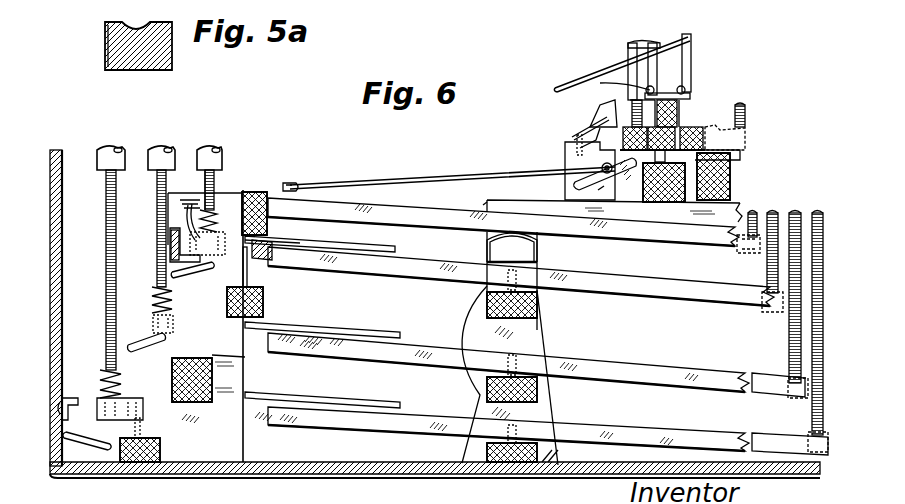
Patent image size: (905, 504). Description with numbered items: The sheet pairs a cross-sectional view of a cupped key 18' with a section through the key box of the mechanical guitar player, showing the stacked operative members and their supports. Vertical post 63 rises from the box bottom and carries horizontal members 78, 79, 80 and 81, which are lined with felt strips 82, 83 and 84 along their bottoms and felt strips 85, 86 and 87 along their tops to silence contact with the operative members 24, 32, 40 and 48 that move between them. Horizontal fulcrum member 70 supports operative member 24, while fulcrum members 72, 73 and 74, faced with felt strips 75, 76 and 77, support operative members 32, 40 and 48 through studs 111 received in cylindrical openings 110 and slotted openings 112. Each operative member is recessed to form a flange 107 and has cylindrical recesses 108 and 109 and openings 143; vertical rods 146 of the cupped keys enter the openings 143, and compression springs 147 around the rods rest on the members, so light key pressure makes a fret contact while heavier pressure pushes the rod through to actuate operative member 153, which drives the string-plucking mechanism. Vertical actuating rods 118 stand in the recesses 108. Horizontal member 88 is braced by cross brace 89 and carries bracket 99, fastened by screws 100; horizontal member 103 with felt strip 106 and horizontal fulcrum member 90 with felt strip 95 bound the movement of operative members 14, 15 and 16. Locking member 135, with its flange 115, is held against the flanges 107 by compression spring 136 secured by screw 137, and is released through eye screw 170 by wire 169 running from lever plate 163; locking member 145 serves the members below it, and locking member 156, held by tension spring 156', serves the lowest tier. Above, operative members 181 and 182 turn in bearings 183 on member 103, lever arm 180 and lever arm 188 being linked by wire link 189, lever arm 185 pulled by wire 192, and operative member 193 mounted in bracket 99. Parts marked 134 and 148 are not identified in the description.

In FIG. 5A, the bar block 18' is at (158, 49).
In FIG. 6, the operative member 24 is at (503, 222).
In FIG. 6, the operative member 32 is at (521, 276).
In FIG. 6, the operative member 40 is at (536, 365).
In FIG. 6, the operative member 48 is at (548, 431).
In FIG. 6, the wire 169 is at (385, 183).
In FIG. 6, the lever plate 163 is at (280, 184).
In FIG. 6, the horizontal member 88 is at (664, 196).
In FIG. 6, the cross brace 89 is at (483, 205).
In FIG. 6, the vertical actuating rod 118 is at (816, 210).
In FIG. 6, the vertical cylindrical recess 108 is at (750, 132).
In FIG. 6, the lever arm 180 is at (628, 62).
In FIG. 6, the lever arm 188 is at (660, 44).
In FIG. 6, the wire link 189 is at (643, 43).
In FIG. 6, the lever arm 185 is at (692, 48).
In FIG. 6, the operative member 182 is at (605, 62).
In FIG. 6, the wire 192 is at (565, 88).
In FIG. 6, the link 134 is at (600, 72).
In FIG. 6, the operative member 181 is at (686, 88).
In FIG. 6, the bearing 183 is at (690, 96).
In FIG. 6, the horizontal member 103 is at (705, 104).
In FIG. 6, the felt strip 106 is at (680, 118).
In FIG. 6, the operative member 14 is at (634, 104).
In FIG. 6, the operative member 16 is at (700, 140).
In FIG. 6, the operative member 15 is at (665, 156).
In FIG. 6, the horizontal fulcrum member 70 is at (540, 248).
In FIG. 6, the horizontal fulcrum member 90 is at (713, 176).
In FIG. 6, the felt strip 95 is at (742, 156).
In FIG. 6, the screw 100 is at (590, 112).
In FIG. 6, the horizontal locking member 135 is at (572, 135).
In FIG. 6, the flange 115 is at (577, 146).
In FIG. 6, the compression spring 136 is at (580, 150).
In FIG. 6, the eye screw 170 is at (600, 168).
In FIG. 6, the screw 137 is at (575, 184).
In FIG. 6, the bracket 99 is at (607, 193).
In FIG. 6, the operative member 193 is at (600, 200).
In FIG. 6, the vertical cylindrical recess 109 is at (600, 106).
In FIG. 6, the flange 107 is at (590, 120).
In FIG. 6, the horizontal fulcrum member 72 is at (540, 307).
In FIG. 6, the felt strip 75 is at (490, 294).
In FIG. 6, the vertical cylindrical opening 110 is at (470, 330).
In FIG. 6, the felt strip 76 is at (540, 372).
In FIG. 6, the horizontal fulcrum member 73 is at (545, 392).
In FIG. 6, the felt strip 77 is at (493, 449).
In FIG. 6, the horizontal fulcrum member 74 is at (560, 456).
In FIG. 6, the stud 111 is at (275, 251).
In FIG. 6, the vertical slotted opening 112 is at (344, 247).
In FIG. 6, the horizontal member 78 is at (270, 230).
In FIG. 6, the felt strip 82 is at (303, 242).
In FIG. 6, the rod 148 is at (248, 268).
In FIG. 6, the horizontal member 79 is at (266, 307).
In FIG. 6, the felt strip 85 is at (265, 287).
In FIG. 6, the felt strip 83 is at (265, 320).
In FIG. 6, the felt strip 86 is at (240, 354).
In FIG. 6, the horizontal member 80 is at (244, 372).
In FIG. 6, the felt strip 84 is at (244, 398).
In FIG. 6, the felt strip 87 is at (162, 438).
In FIG. 6, the horizontal member 81 is at (155, 472).
In FIG. 6, the vertical post 63 is at (246, 465).
In FIG. 6, the operative member 153 is at (148, 353).
In FIG. 6, the horizontal locking member 156 is at (60, 451).
In FIG. 6, the tension spring 156' is at (97, 468).
In FIG. 6, the compression spring 147 is at (200, 232).
In FIG. 6, the vertical rod 146 is at (225, 230).
In FIG. 6, the locking member 145 is at (185, 212).
In FIG. 6, the vertical cylindrical opening 143 is at (203, 269).